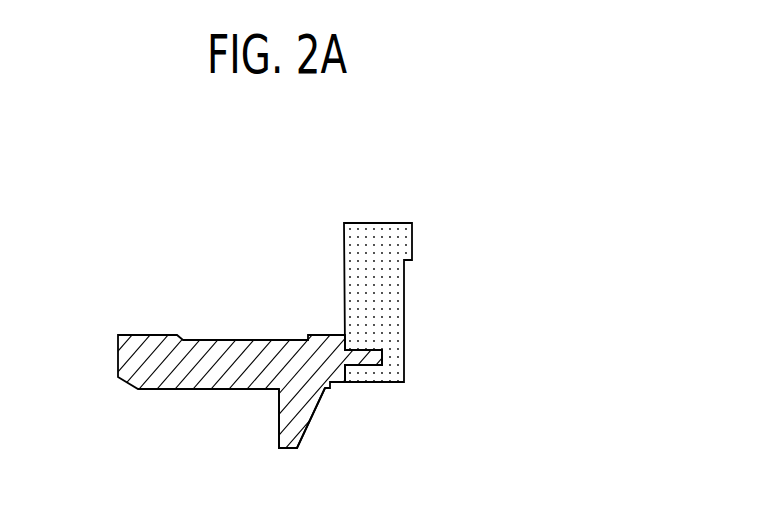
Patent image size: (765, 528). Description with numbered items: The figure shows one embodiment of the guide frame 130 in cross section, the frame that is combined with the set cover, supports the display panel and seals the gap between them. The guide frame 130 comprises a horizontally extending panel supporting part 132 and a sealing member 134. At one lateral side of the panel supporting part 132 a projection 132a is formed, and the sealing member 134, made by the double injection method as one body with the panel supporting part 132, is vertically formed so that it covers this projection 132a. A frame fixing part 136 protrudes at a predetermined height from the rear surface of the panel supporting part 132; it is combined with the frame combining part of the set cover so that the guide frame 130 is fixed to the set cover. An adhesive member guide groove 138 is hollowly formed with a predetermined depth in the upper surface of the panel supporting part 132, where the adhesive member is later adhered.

The guide frame 130 is at (138, 252).
The panel supporting part 132 is at (124, 367).
The projection 132a is at (358, 372).
The sealing member 134 is at (385, 295).
The frame fixing part 136 is at (280, 408).
The adhesive member guide groove 138 is at (243, 330).